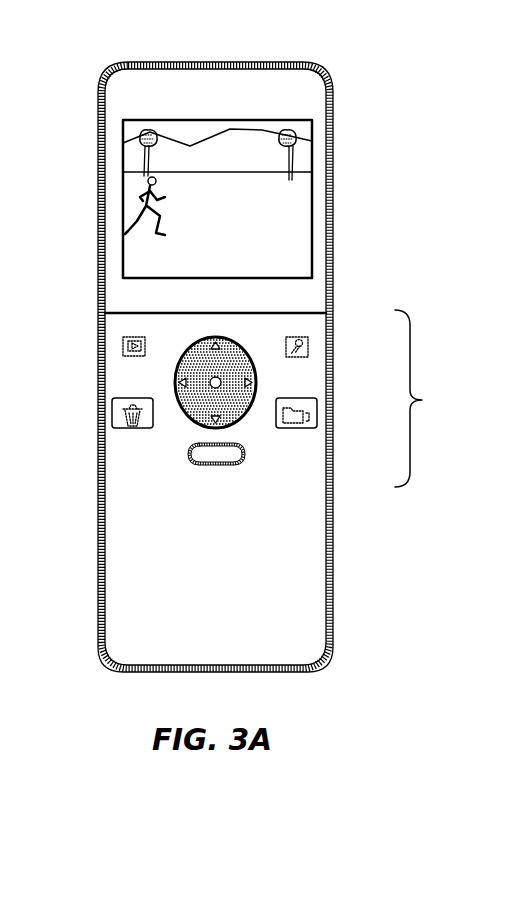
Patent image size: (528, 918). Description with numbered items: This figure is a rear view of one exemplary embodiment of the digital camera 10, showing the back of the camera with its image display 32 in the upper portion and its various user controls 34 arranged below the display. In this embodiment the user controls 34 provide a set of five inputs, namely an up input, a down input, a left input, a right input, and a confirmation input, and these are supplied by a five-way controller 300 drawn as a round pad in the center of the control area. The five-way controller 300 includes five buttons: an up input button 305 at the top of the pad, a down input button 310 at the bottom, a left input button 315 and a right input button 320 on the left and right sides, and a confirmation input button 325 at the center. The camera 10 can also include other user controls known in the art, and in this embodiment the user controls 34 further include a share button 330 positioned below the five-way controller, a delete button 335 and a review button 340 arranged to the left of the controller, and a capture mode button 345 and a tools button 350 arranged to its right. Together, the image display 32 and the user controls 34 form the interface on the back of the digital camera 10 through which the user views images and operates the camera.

The digital camera 10 is at (332, 93).
The image display 32 is at (131, 200).
The user controls 34 is at (427, 398).
The five-way controller 300 is at (240, 427).
The up input button 305 is at (205, 343).
The down input button 310 is at (204, 424).
The left input button 315 is at (178, 382).
The right input button 320 is at (253, 382).
The confirmation input button 325 is at (222, 378).
The share button 330 is at (199, 453).
The delete button 335 is at (112, 422).
The review button 340 is at (122, 347).
The capture mode button 345 is at (316, 411).
The tools button 350 is at (308, 348).